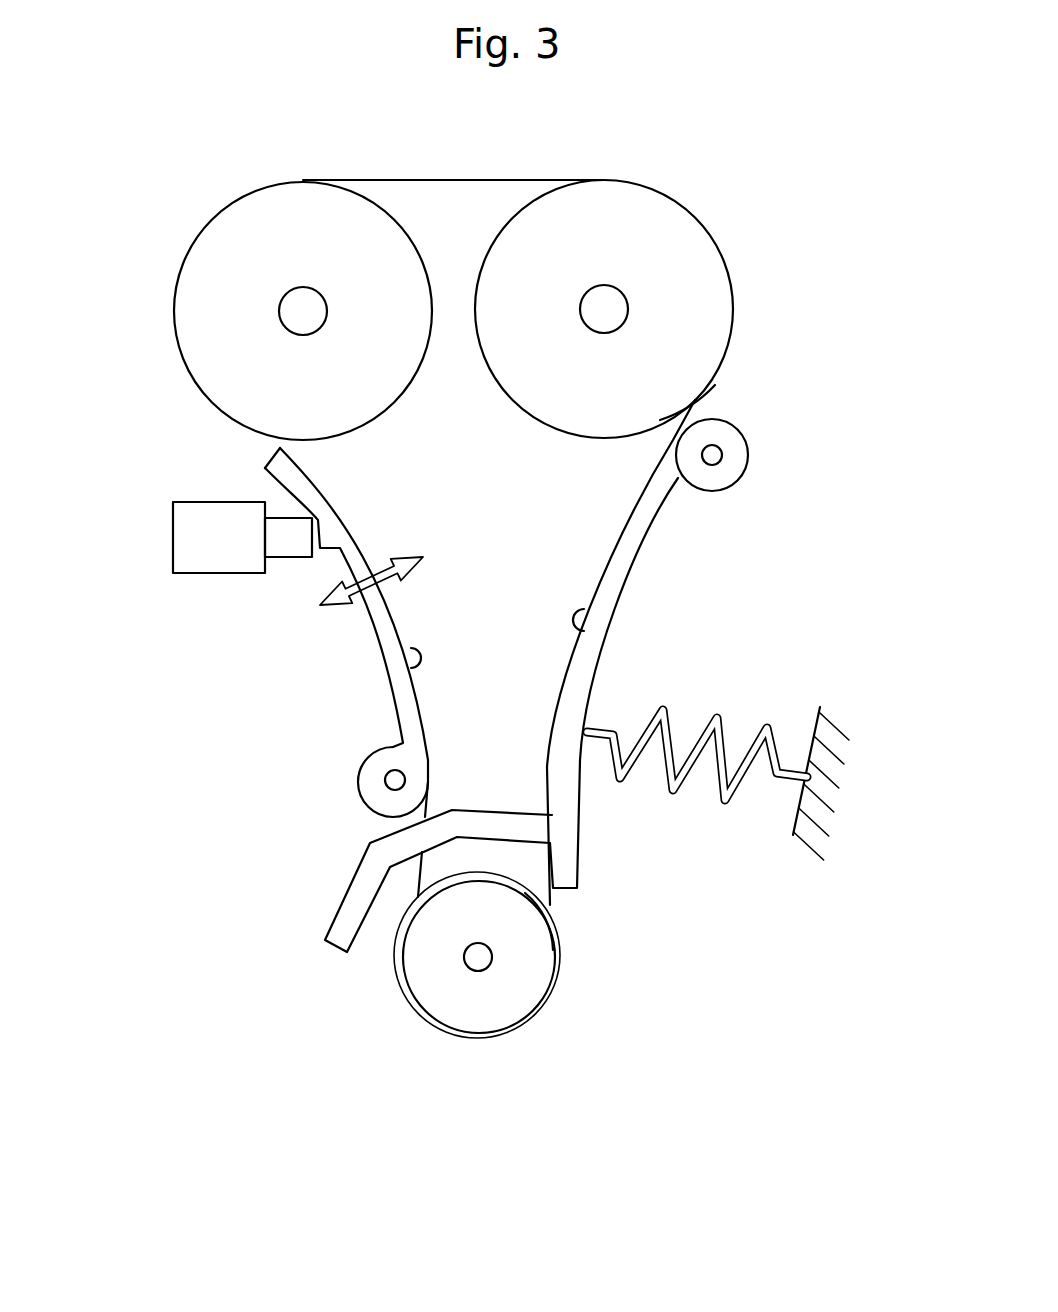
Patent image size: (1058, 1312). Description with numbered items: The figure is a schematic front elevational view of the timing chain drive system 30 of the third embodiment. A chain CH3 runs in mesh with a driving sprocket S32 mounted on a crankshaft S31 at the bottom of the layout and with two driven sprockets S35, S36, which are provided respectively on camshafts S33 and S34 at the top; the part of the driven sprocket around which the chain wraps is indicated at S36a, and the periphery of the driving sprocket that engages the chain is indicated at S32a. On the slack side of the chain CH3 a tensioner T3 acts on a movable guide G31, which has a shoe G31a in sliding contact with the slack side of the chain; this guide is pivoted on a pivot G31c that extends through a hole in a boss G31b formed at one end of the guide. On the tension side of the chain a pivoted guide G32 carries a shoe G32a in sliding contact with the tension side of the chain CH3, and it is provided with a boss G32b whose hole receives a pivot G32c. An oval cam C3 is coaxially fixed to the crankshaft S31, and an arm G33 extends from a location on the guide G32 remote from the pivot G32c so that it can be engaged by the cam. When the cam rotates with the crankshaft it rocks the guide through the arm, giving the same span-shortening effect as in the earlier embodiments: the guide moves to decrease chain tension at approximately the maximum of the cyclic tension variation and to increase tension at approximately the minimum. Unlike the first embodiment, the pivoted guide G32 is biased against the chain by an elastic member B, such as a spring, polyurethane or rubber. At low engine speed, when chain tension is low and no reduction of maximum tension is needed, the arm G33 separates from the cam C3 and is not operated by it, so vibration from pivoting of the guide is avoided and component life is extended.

The chain CH3 is at (456, 178).
The camshaft S33 is at (287, 294).
The camshaft S34 is at (621, 292).
The driven sprocket S35 is at (200, 323).
The driven sprocket S36 is at (713, 330).
The outer surface of second sheet roll S36a is at (693, 402).
The tensioner T3 is at (187, 535).
The movable guide G31 is at (185, 662).
The shoe G31a is at (415, 672).
The boss G31b is at (365, 765).
The pivot G31c is at (385, 781).
The pivoted guide G32 is at (867, 497).
The shoe G32a is at (578, 615).
The boss G32b is at (712, 491).
The pivot G32c is at (720, 460).
The arm G33 is at (340, 915).
The elastic member B is at (685, 780).
The outer surface of feed roller S32a is at (557, 932).
The oval cam C3 is at (563, 982).
The crankshaft S31 is at (467, 967).
The driving sprocket S32 is at (522, 997).
The timing chain drive system 30 is at (470, 1080).